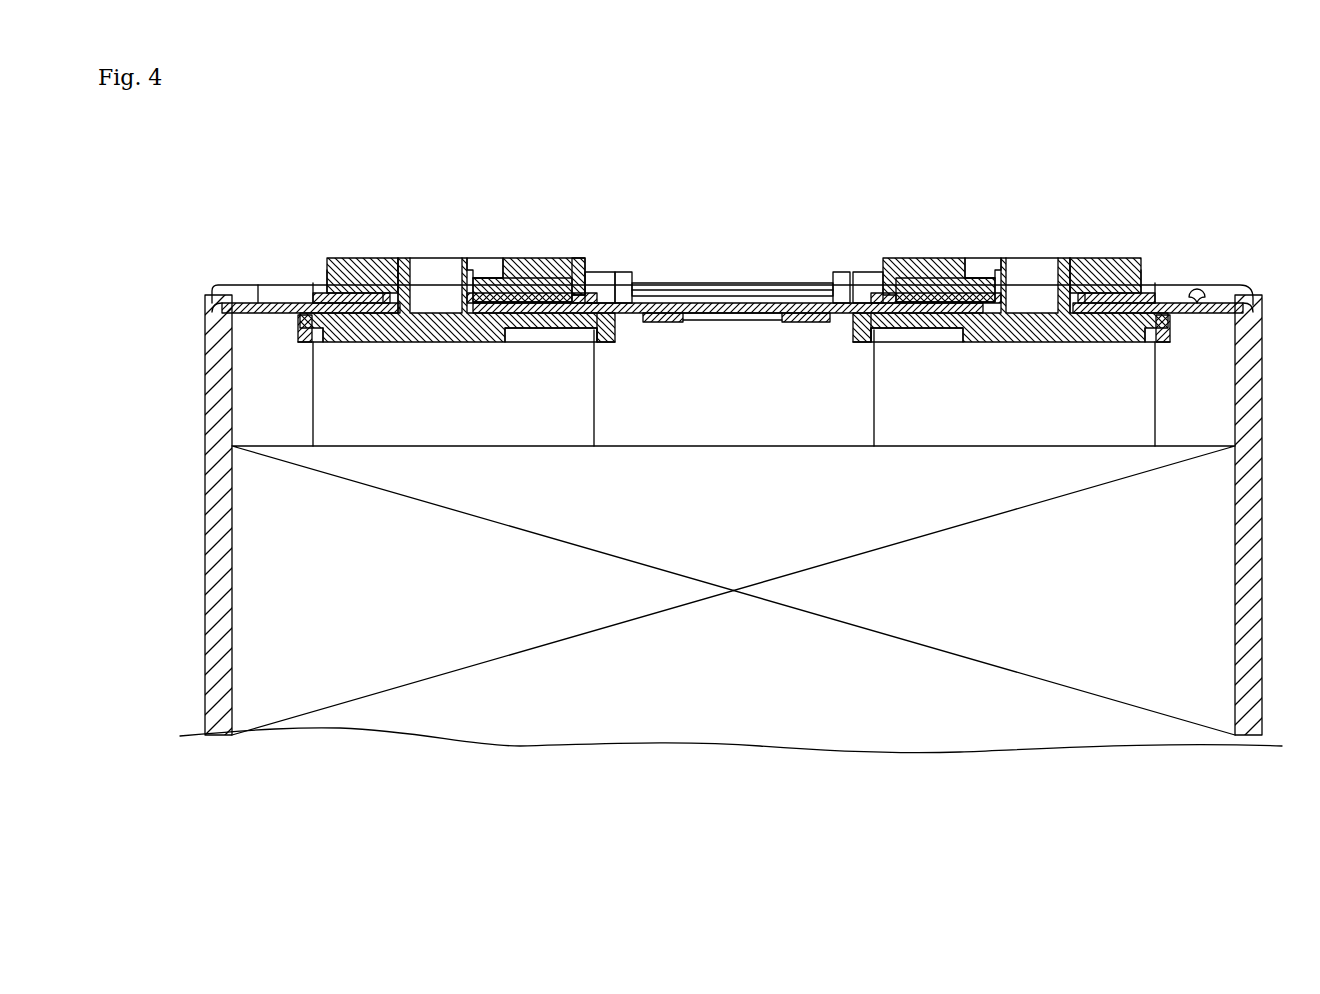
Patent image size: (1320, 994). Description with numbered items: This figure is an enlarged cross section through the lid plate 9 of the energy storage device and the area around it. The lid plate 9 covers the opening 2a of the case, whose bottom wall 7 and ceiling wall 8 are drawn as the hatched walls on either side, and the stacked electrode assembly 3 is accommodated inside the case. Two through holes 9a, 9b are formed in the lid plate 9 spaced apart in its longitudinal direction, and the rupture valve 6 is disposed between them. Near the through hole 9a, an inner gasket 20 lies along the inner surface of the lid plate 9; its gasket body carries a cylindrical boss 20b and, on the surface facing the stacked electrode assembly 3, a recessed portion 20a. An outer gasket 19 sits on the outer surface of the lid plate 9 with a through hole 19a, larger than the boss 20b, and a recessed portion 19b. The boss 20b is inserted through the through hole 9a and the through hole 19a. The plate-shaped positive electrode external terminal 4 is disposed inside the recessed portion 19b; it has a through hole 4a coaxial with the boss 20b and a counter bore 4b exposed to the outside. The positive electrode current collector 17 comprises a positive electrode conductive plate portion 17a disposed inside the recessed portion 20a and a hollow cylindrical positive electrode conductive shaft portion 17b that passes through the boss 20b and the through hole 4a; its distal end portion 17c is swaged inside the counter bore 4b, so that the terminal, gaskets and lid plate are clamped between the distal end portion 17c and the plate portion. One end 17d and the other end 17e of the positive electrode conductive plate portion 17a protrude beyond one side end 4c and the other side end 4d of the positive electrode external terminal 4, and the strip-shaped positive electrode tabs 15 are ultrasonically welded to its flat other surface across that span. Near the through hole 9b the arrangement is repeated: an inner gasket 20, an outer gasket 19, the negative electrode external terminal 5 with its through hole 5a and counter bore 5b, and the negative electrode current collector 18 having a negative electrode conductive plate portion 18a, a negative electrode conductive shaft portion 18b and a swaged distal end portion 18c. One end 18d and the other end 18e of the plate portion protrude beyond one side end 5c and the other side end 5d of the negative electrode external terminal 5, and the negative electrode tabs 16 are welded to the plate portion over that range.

The opening 2a is at (1232, 285).
The stacked electrode assembly 3 is at (597, 715).
The positive electrode external terminal 4 is at (1115, 262).
The through hole 4a is at (1055, 262).
The counter bore 4b is at (1095, 262).
The one side end 4c is at (870, 258).
The other side end 4d is at (1142, 268).
The negative electrode external terminal 5 is at (360, 262).
The through hole 5a is at (482, 280).
The counter bore 5b is at (512, 278).
The one side end 5c is at (327, 272).
The other side end 5d is at (600, 260).
The rupture valve 6 is at (725, 290).
The bottom wall 7 is at (208, 392).
The ceiling wall 8 is at (1262, 380).
The lid plate 9 is at (1253, 294).
The through hole 9a is at (950, 340).
The through hole 9b is at (493, 260).
The positive electrode tab 15 is at (1140, 420).
The negative electrode tab 16 is at (583, 420).
The positive electrode current collector 17 is at (1040, 248).
The positive electrode conductive plate portion 17a is at (890, 340).
The positive electrode conductive shaft portion 17b is at (1015, 262).
The distal end portion 17c is at (990, 268).
The one end 17d is at (866, 340).
The other end 17e is at (1146, 345).
The negative electrode current collector 18 is at (452, 248).
The negative electrode conductive plate portion 18a is at (553, 340).
The negative electrode conductive shaft portion 18b is at (432, 258).
The distal end portion 18c is at (440, 275).
The one end 18d is at (316, 360).
The other end 18e is at (600, 335).
The outer gasket 19 is at (320, 285).
The through hole 19a is at (540, 300).
The recessed portion 19b is at (572, 262).
The inner gasket 20 is at (300, 335).
The recessed portion 20a is at (308, 345).
The boss 20b is at (385, 300).